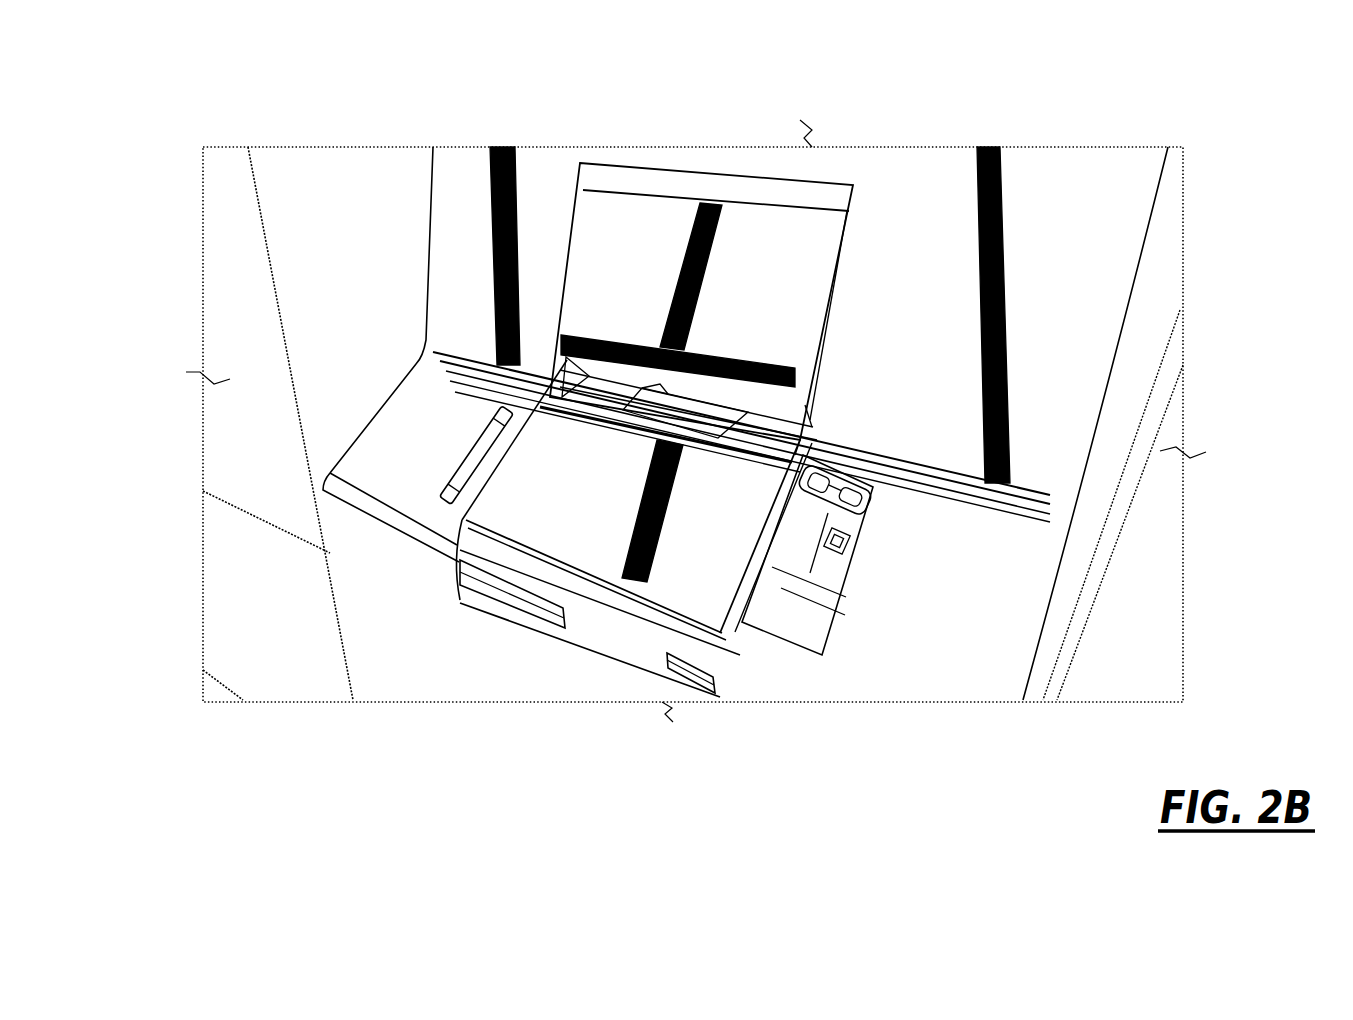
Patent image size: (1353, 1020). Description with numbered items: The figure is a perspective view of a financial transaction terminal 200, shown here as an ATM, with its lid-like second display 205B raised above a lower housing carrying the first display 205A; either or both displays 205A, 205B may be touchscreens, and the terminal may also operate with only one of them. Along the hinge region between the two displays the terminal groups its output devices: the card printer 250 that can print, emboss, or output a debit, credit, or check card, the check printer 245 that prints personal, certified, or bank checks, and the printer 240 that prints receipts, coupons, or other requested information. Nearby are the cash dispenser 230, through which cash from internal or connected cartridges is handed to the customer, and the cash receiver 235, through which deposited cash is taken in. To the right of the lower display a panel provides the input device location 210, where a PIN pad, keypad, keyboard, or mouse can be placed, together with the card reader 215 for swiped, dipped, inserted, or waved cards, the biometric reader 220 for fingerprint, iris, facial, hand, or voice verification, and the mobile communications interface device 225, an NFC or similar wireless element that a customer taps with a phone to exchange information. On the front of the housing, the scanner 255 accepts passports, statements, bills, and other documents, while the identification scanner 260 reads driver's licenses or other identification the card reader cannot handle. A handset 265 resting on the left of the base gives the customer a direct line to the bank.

The financial transaction terminal 200 is at (185, 602).
The first display 205A is at (605, 553).
The second display 205B is at (642, 230).
The input device location 210 is at (805, 630).
The card reader 215 is at (872, 503).
The biometric reader 220 is at (830, 567).
The mobile communications interface device 225 is at (793, 553).
The cash dispenser 230 is at (795, 442).
The cash receiver 235 is at (787, 417).
The printer 240 is at (593, 392).
The check printer 245 is at (590, 382).
The card printer 250 is at (585, 367).
The scanner 255 is at (503, 590).
The identification scanner 260 is at (693, 667).
The handset 265 is at (440, 507).